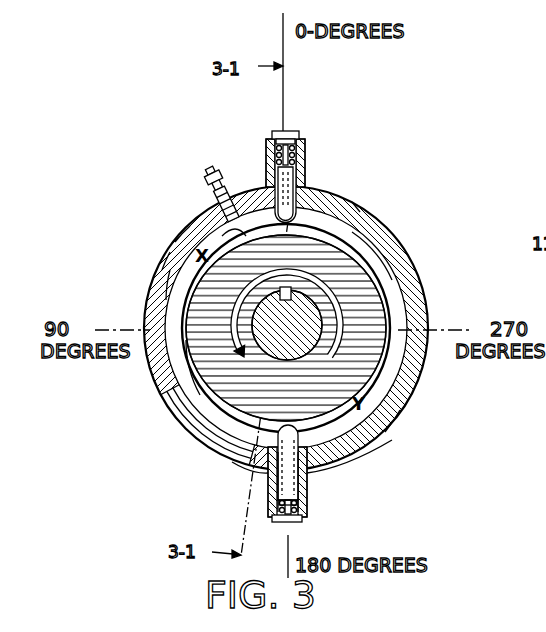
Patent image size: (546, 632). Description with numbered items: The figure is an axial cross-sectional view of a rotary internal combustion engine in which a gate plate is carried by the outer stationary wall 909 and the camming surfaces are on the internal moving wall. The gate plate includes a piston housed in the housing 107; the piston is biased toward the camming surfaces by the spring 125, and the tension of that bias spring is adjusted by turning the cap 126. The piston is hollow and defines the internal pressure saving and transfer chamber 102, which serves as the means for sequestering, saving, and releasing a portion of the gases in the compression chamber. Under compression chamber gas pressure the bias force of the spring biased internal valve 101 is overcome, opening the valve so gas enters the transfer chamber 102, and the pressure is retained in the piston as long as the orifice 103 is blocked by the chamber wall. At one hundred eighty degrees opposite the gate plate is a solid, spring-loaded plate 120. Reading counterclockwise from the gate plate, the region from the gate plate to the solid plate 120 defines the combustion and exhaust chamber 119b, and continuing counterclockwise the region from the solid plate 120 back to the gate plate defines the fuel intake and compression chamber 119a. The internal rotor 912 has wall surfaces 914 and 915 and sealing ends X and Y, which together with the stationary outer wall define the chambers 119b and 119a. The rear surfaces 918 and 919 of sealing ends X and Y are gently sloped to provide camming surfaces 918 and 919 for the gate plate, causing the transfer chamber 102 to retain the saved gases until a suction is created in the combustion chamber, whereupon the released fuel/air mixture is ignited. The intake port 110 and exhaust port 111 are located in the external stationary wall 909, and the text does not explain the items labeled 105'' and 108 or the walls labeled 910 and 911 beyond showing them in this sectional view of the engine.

The spring biased internal valve 101 is at (305, 212).
The internal pressure saving and transfer chamber 102 is at (298, 182).
The orifice 103 is at (262, 185).
The port 105'' is at (184, 214).
The housing 107 is at (268, 150).
The plug 108 is at (212, 177).
The intake port 110 is at (303, 487).
The exhaust port 111 is at (250, 470).
The fuel intake and compression chamber 119a is at (372, 254).
The combustion and exhaust chamber 119b is at (182, 377).
The solid, spring-loaded plate 120 is at (358, 458).
The spring 125 is at (300, 150).
The cap 126 is at (292, 132).
The outer stationary wall 909 is at (420, 279).
The housing inner wall 910 is at (165, 262).
The housing outer wall 911 is at (396, 417).
The internal rotor 912 is at (172, 282).
The wall surface 914 is at (362, 226).
The wall surface 915 is at (185, 362).
The camming surface 918 is at (178, 240).
The camming surface 919 is at (390, 443).